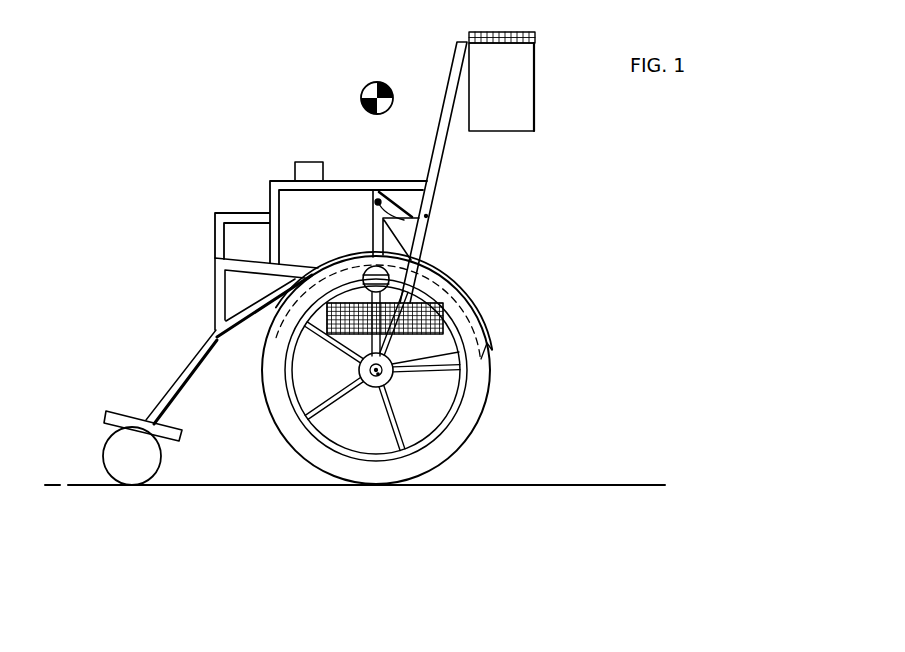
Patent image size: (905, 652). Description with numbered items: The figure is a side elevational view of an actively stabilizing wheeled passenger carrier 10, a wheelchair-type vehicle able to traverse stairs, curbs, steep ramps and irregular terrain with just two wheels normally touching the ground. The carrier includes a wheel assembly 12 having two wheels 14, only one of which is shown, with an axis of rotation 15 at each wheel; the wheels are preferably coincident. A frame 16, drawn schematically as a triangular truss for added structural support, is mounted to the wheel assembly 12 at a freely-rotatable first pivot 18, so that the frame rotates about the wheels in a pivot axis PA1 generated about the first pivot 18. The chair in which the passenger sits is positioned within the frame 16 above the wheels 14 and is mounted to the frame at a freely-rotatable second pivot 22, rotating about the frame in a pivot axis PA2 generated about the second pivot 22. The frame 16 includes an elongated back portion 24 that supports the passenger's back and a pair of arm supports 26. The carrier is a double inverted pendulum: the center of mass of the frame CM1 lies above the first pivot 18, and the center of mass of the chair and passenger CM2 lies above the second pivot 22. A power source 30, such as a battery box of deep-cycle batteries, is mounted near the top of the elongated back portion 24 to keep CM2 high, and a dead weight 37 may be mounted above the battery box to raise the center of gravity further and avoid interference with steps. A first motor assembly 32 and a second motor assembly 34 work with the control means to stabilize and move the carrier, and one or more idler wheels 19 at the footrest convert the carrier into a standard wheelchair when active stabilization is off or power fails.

The wheeled passenger carrier 10 is at (292, 104).
The wheel assembly 12 is at (262, 368).
The wheels 14 is at (491, 371).
The axis of rotation 15 is at (367, 383).
The frame 16 is at (469, 297).
The first pivot 18 is at (384, 381).
The idler wheels 19 is at (118, 445).
The second pivot 22 is at (388, 203).
The elongated back portion 24 is at (437, 170).
The arm supports 26 is at (268, 180).
The power source 30 is at (536, 132).
The first motor assembly 32 is at (318, 163).
The second motor assembly 34 is at (443, 324).
The dead weight 37 is at (537, 34).
The center of mass of the frame CM1 is at (366, 275).
The center of mass of the chair/passenger CM2 is at (387, 83).
The pivot axis PA1 is at (392, 377).
The pivot axis PA2 is at (426, 216).